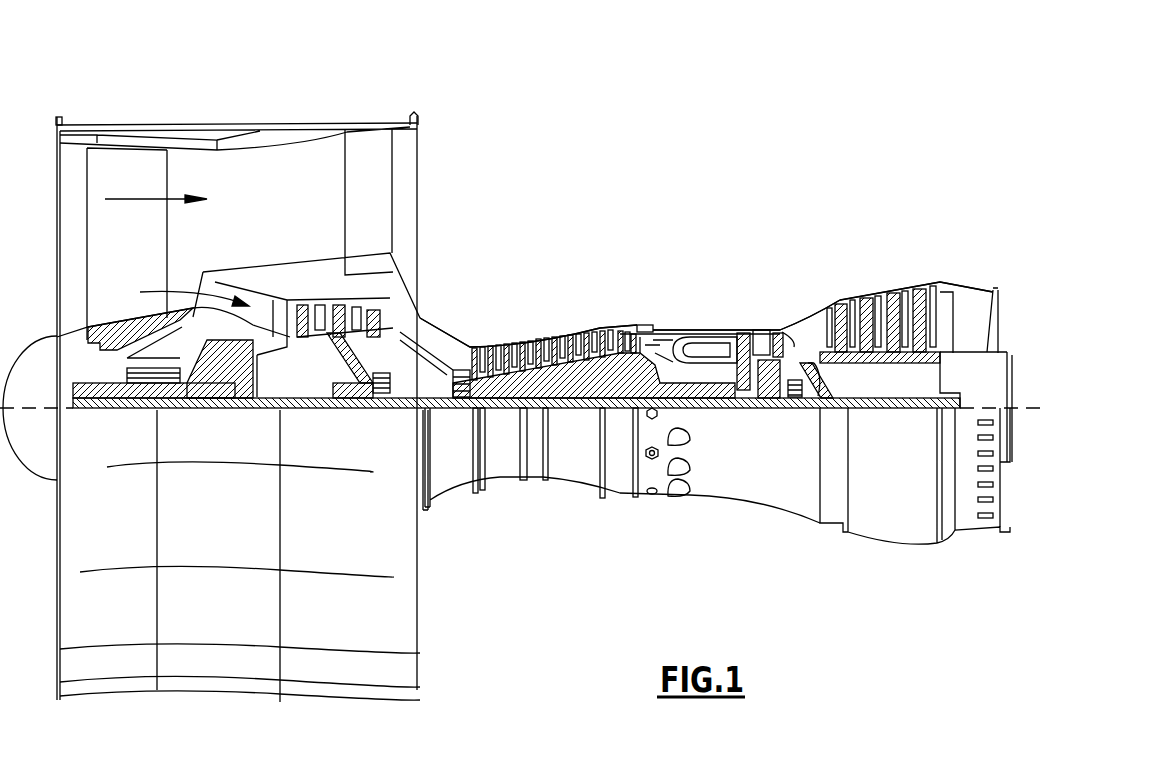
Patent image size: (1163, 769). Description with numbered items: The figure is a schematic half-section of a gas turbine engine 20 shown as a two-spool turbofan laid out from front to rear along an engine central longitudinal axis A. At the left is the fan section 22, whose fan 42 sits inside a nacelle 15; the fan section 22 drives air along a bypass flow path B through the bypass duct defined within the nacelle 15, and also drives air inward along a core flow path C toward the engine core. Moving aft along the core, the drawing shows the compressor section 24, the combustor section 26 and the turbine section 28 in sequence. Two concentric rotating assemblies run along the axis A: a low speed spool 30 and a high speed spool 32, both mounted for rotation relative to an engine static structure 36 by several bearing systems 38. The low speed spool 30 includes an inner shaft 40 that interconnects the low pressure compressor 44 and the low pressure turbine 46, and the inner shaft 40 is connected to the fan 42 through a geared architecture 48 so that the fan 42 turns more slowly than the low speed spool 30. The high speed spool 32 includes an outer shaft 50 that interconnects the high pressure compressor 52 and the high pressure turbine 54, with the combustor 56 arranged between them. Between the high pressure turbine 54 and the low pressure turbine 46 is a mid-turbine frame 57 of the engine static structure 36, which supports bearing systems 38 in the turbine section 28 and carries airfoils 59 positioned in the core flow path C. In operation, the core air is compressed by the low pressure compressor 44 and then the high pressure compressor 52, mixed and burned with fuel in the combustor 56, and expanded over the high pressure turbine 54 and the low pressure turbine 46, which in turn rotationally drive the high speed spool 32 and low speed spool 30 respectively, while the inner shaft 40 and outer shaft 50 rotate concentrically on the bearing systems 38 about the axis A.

The nacelle 15 is at (240, 128).
The gas turbine engine 20 is at (708, 168).
The fan section 22 is at (166, 113).
The compressor section 24 is at (471, 324).
The combustor section 26 is at (694, 297).
The turbine section 28 is at (845, 264).
The low speed spool 30 is at (578, 420).
The high speed spool 32 is at (622, 353).
The engine static structure 36 is at (618, 505).
The bearing systems 38 is at (381, 405).
The inner shaft 40 is at (443, 413).
The fan 42 is at (141, 254).
The low pressure compressor 44 is at (347, 313).
The low pressure turbine 46 is at (887, 297).
The geared architecture 48 is at (247, 393).
The outer shaft 50 is at (700, 398).
The high pressure compressor 52 is at (550, 367).
The high pressure turbine 54 is at (753, 327).
The combustor 56 is at (690, 350).
The mid-turbine frame 57 is at (804, 311).
The airfoils 59 is at (823, 385).
The engine central longitudinal axis A is at (1085, 408).
The bypass flow path B is at (140, 197).
The core flow path C is at (184, 292).